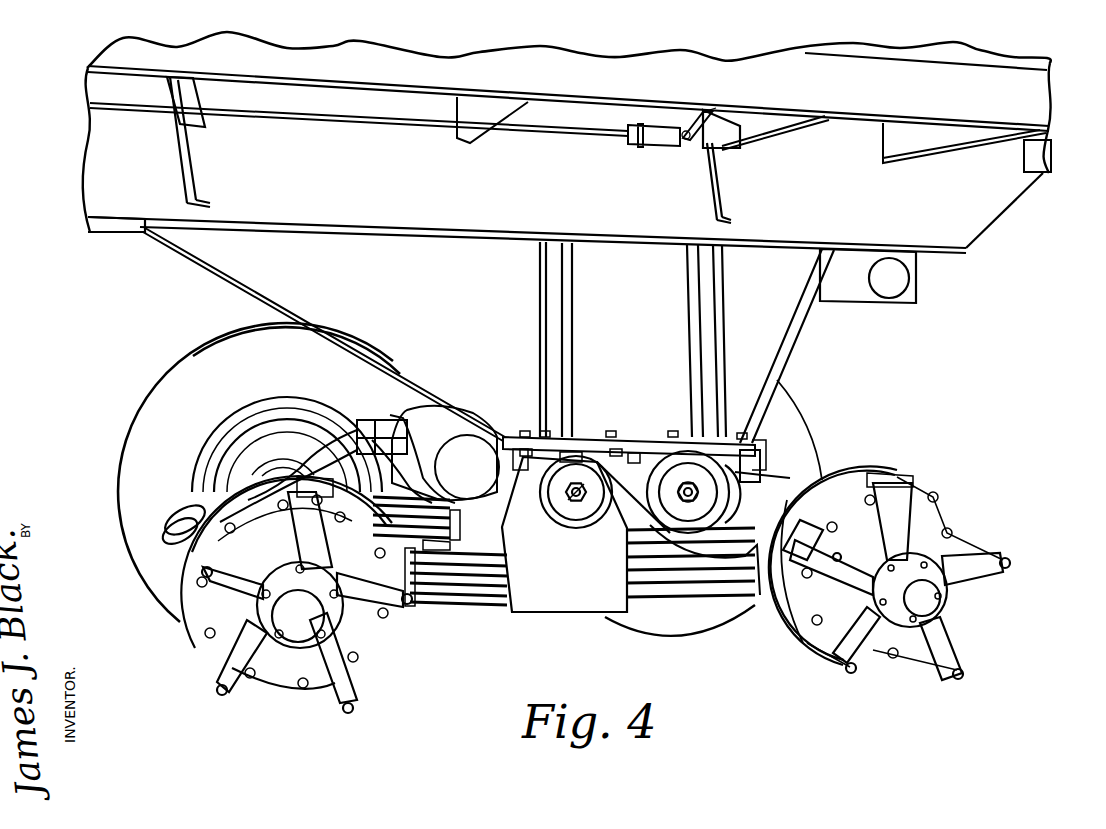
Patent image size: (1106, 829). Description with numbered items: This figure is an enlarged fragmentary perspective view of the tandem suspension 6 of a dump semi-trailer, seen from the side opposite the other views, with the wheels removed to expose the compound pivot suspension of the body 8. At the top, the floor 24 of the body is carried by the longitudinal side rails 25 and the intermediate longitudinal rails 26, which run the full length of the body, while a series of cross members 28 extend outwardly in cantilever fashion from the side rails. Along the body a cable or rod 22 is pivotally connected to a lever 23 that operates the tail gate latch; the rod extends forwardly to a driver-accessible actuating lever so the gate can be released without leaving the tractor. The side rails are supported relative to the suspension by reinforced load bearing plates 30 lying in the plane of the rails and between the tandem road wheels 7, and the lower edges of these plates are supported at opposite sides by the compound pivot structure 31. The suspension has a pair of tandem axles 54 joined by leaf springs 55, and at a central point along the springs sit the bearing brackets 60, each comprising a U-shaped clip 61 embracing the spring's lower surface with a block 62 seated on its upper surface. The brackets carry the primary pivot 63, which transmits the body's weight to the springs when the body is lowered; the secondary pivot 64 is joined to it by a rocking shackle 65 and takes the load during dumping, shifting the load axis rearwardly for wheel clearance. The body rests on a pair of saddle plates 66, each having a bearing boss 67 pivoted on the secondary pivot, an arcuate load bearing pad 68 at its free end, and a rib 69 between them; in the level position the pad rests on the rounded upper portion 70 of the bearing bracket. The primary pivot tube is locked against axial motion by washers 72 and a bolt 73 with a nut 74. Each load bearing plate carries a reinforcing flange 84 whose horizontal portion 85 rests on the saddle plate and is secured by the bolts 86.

The tandem suspension 6 is at (505, 656).
The tandem road wheels 7 is at (155, 395).
The body 8 is at (118, 51).
The cable or rod 22 is at (392, 122).
The lever 23 is at (714, 110).
The floor 24 is at (970, 57).
The longitudinal side rails 25 is at (104, 180).
The intermediate longitudinal rails 26 is at (1023, 96).
The cross members 28 is at (478, 108).
The load bearing plates 30 is at (236, 281).
The compound pivot structure 31 is at (758, 464).
The tandem axles 54 is at (293, 626).
The leaf springs 55 is at (706, 585).
The bearing brackets 60 is at (572, 596).
The U-shaped clip 61 is at (607, 595).
The block 62 is at (520, 507).
The primary pivot 63 is at (569, 514).
The secondary pivot 64 is at (687, 473).
The rocking shackle 65 is at (616, 516).
The saddle plates 66 is at (648, 444).
The bearing boss 67 is at (722, 455).
The load bearing pad 68 is at (576, 460).
The rib 69 is at (632, 470).
The rounded upper portion 70 is at (546, 435).
The washers 72 is at (712, 502).
The bolt 73 is at (580, 507).
The nut 74 is at (747, 468).
The reinforcing flange 84 is at (355, 350).
The horizontal portion 85 is at (600, 435).
The bolts 86 is at (520, 432).